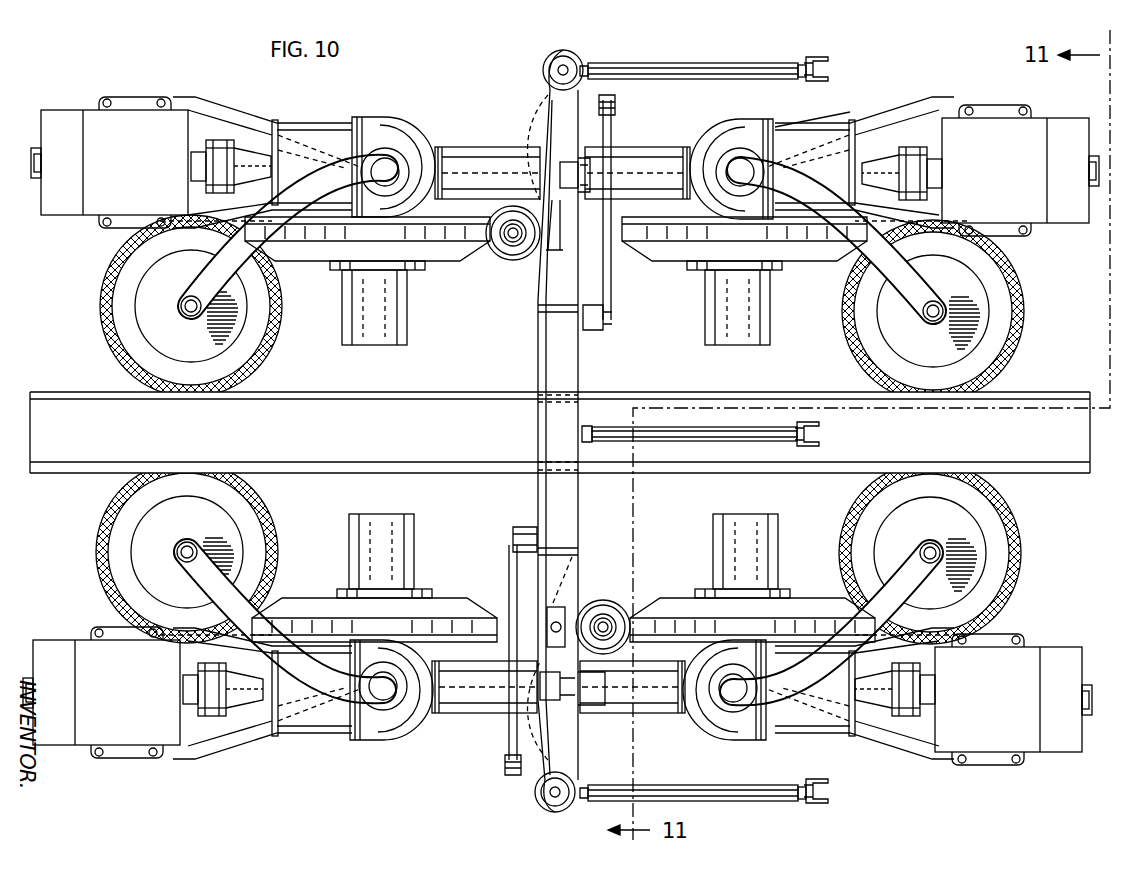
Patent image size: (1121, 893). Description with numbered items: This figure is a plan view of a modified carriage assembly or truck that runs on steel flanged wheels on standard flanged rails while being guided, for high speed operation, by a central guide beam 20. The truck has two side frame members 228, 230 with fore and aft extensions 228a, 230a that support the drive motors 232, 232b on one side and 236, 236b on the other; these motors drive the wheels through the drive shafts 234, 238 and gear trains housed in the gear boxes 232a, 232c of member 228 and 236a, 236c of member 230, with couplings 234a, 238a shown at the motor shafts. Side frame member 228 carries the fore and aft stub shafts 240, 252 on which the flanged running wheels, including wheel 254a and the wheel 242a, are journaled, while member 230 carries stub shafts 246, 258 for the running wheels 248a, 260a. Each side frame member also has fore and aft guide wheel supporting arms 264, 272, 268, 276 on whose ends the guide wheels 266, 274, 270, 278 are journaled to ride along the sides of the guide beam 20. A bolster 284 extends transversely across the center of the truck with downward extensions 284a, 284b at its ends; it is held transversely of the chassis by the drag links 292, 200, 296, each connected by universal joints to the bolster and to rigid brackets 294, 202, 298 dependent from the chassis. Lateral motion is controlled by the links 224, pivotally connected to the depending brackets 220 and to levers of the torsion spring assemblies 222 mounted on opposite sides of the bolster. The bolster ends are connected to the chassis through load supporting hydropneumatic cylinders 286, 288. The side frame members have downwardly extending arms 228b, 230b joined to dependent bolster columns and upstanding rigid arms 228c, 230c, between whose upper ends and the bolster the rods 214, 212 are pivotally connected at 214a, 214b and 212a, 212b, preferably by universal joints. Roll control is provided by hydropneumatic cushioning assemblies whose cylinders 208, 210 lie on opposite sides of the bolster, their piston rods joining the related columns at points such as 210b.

The central guide beam 20 is at (450, 463).
The drag link 200 is at (712, 441).
The rigid bracket 202 is at (820, 438).
The cylinder 208 is at (596, 604).
The cylinder 210 is at (511, 252).
The connection point 210b is at (500, 222).
The rod 212 is at (556, 196).
The pivotal connection 212a is at (590, 182).
The pivotal connection 212b is at (548, 262).
The rod 214 is at (540, 652).
The pivotal connection 214a is at (545, 686).
The pivotal connection 214b is at (576, 567).
The depending bracket 220 is at (616, 105).
The torsion spring assembly 222 is at (600, 322).
The link 224 is at (612, 222).
The side frame member 228 is at (626, 149).
The fore and aft extension 228a is at (172, 98).
The rigid downwardly extending arm 228b is at (536, 726).
The upstanding rigid arm 228c is at (540, 149).
The side frame member 230 is at (650, 714).
The fore and aft extension 230a is at (108, 759).
The rigid downwardly extending arm 230b is at (546, 110).
The upstanding rigid arm 230c is at (598, 714).
The drive motor 232 is at (1020, 170).
The gear box 232a is at (795, 133).
The drive motor 232b is at (109, 162).
The gear box 232c is at (338, 120).
The drive shaft 234 is at (922, 162).
The coupling 234a is at (216, 152).
The drive motor 236 is at (1013, 699).
The gear box 236a is at (780, 740).
The drive motor 236b is at (101, 692).
The gear box 236c is at (330, 740).
The drive shaft 238 is at (905, 726).
The coupling 238a is at (212, 684).
The stub shaft 240 is at (716, 342).
The disc 242a is at (652, 262).
The stub shaft 246 is at (768, 522).
The flanged steel running wheel 248a is at (644, 605).
The stub shaft 252 is at (376, 347).
The flanged steel running wheel 254a is at (284, 262).
The stub shaft 258 is at (402, 540).
The flanged steel running wheel 260a is at (286, 606).
The guide wheel supporting arm 264 is at (858, 278).
The wheel 266 is at (1012, 312).
The guide wheel supporting arm 268 is at (926, 559).
The guide wheel 270 is at (1012, 532).
The guide wheel supporting arm 272 is at (215, 242).
The guide wheel 274 is at (120, 300).
The guide wheel supporting arm 276 is at (198, 521).
The guide wheel 278 is at (100, 546).
The bolster 284 is at (580, 372).
The downward extension of bolster 284a is at (540, 766).
The downward extension of bolster 284b is at (556, 92).
The cylinder 286 is at (543, 808).
The cylinder 288 is at (556, 58).
The drag link 292 is at (670, 64).
The rigid bracket 294 is at (812, 60).
The drag link 296 is at (712, 802).
The rigid bracket 298 is at (820, 805).